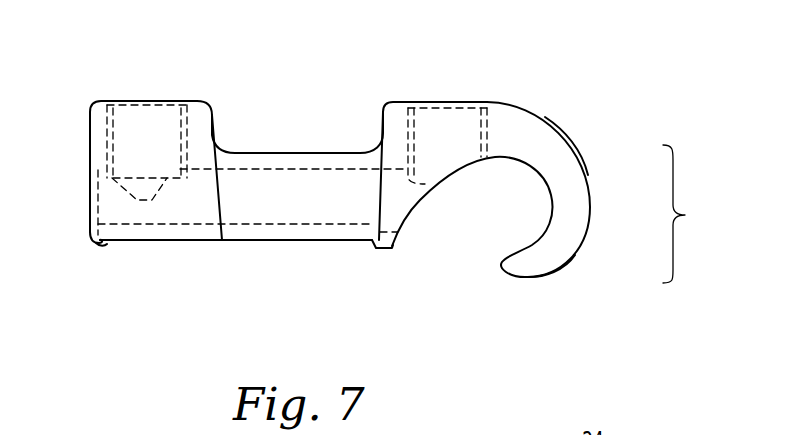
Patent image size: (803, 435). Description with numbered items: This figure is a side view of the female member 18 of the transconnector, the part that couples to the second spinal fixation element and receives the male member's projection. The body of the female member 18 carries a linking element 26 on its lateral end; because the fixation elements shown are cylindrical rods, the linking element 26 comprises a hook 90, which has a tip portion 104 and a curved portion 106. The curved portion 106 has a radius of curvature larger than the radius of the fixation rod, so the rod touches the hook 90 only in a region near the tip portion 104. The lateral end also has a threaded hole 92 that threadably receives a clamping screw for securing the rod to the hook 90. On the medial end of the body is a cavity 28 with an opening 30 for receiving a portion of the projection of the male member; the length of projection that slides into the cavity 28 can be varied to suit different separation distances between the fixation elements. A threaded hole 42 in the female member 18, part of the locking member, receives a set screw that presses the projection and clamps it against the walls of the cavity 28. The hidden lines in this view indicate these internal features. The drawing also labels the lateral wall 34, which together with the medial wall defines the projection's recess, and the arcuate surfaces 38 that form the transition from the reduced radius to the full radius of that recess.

The female member 18 is at (337, 90).
The linking element 26 is at (483, 100).
The cavity 28 is at (314, 224).
The opening 30 is at (95, 237).
The lateral wall 34 is at (180, 240).
The arcuate surfaces 38 is at (107, 245).
The threaded hole 42 is at (120, 121).
The hook 90 is at (690, 214).
The threaded hole 92 is at (417, 118).
The tip portion 104 is at (572, 282).
The curved portion 106 is at (580, 152).